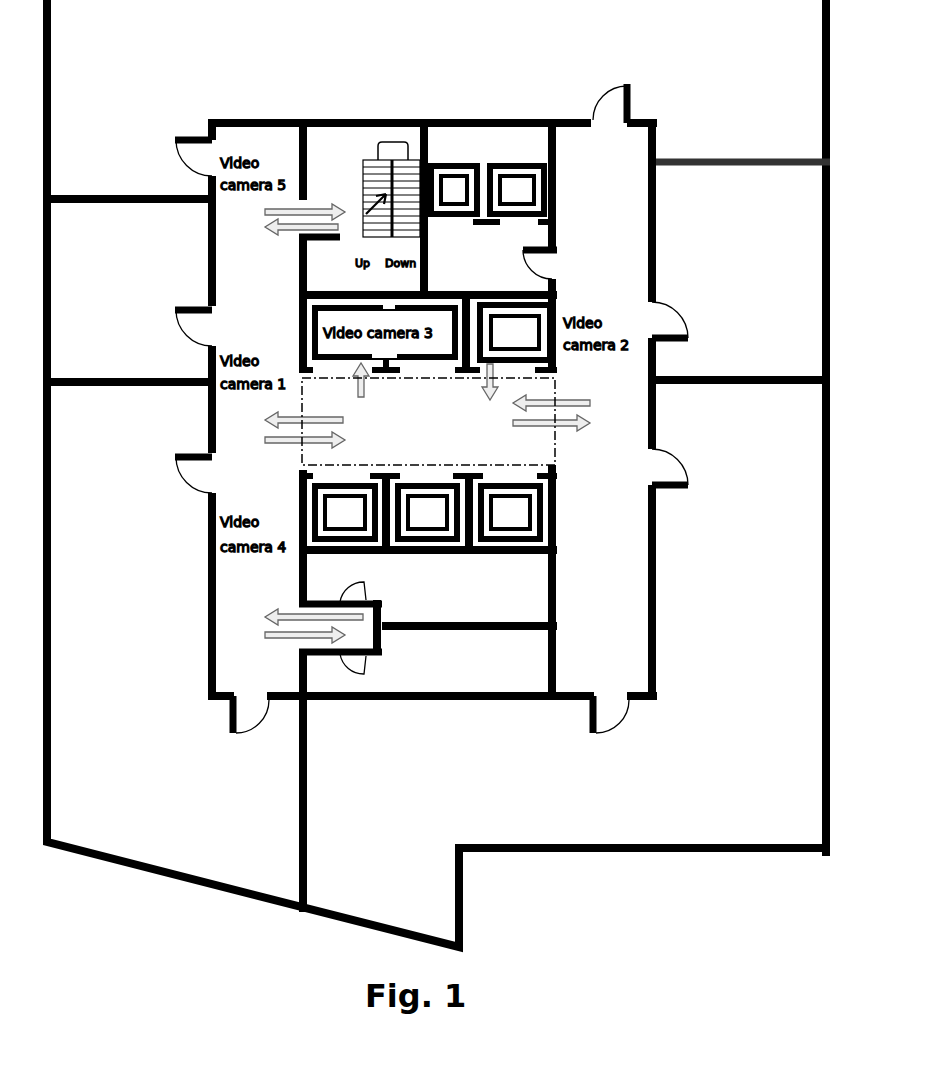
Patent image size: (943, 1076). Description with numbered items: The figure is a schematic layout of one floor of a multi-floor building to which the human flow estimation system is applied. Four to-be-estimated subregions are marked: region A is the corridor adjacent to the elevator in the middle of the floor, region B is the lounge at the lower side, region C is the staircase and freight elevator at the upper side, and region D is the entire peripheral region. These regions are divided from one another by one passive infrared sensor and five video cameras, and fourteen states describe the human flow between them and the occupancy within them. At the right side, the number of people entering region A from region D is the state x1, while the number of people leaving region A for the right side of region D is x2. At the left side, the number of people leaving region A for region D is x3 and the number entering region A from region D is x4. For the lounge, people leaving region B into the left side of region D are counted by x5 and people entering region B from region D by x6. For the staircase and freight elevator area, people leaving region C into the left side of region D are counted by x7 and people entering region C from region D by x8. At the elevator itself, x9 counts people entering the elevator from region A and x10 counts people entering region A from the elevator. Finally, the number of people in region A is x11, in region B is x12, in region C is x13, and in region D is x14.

The number of people entering region A from the right side of region D x1 is at (551, 387).
The number of people entering the right side of region D from region A x2 is at (551, 444).
The number of people entering the left side of region D from region A x3 is at (287, 414).
The number of people entering region A from the left side of region D x4 is at (319, 441).
The number of people entering the left side of region D from region B x5 is at (308, 598).
The number of people entering region B from the left side of region D x6 is at (296, 656).
The number of people entering the left side of region D from region C x7 is at (301, 245).
The number of people entering region C from the left side of region D x8 is at (370, 189).
The number of people entering the elevator from region A x9 is at (370, 391).
The number of people entering region A from the elevator x10 is at (466, 392).
The number of people in region A x11 is at (428, 421).
The number of people in region B x12 is at (430, 588).
The number of people in region C x13 is at (490, 211).
The number of people in region D x14 is at (602, 409).